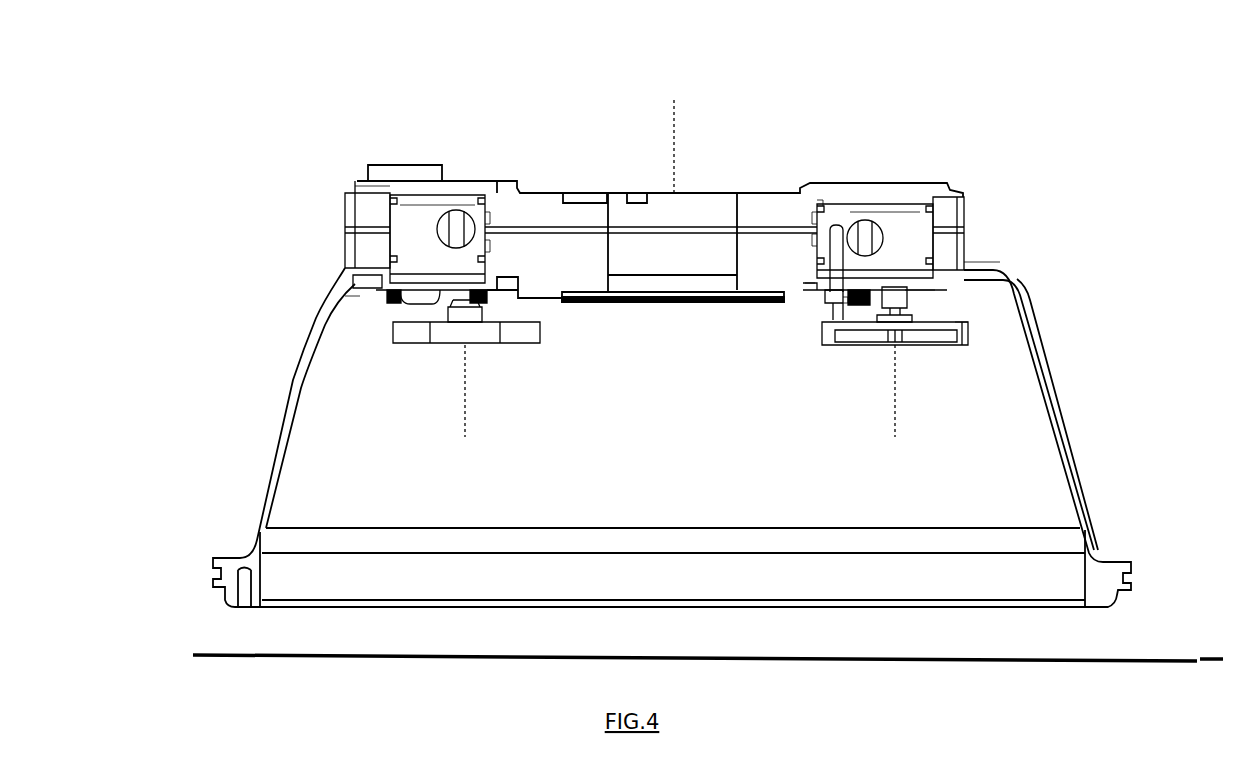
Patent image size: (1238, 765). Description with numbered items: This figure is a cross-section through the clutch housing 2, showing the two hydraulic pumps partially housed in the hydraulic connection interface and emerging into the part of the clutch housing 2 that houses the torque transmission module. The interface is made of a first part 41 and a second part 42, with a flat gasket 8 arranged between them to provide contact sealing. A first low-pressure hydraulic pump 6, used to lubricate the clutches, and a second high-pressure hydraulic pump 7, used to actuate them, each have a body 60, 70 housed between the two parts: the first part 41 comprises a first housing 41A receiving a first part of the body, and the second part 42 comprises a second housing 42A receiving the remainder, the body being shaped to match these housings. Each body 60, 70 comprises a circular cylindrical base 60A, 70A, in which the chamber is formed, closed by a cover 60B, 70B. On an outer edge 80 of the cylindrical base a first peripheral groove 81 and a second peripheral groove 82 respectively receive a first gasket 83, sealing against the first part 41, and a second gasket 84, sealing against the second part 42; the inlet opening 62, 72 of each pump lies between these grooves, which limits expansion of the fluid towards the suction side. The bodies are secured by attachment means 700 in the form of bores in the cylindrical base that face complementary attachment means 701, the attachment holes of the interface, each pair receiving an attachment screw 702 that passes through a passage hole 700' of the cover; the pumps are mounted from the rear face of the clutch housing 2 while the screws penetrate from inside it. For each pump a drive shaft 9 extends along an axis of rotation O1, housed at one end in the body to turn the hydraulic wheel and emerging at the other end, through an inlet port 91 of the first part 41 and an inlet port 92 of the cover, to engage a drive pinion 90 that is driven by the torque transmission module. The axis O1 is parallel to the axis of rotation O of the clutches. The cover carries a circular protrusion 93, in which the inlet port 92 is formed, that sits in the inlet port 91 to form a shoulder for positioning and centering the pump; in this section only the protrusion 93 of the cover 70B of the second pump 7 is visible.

The clutch housing 2 is at (160, 107).
The axis of rotation of the clutches O is at (674, 145).
The axis of rotation of the drive shaft O1 is at (465, 387).
The second part of the interface 42 is at (330, 200).
The first part of the interface 41 is at (322, 258).
The first housing 41A is at (487, 247).
The second housing 42A is at (487, 218).
The flat gasket 8 is at (345, 227).
The outer edge 80 is at (345, 238).
The first peripheral groove 81 is at (345, 305).
The second peripheral groove 82 is at (355, 190).
The first gasket 83 is at (812, 263).
The second gasket 84 is at (818, 207).
The first low-pressure hydraulic pump 6 is at (435, 203).
The body of the first pump 60 is at (418, 196).
The cylindrical base of the first pump 60A is at (440, 203).
The cover of the first pump 60B is at (382, 278).
The inlet opening of the first pump 62 is at (484, 201).
The second high-pressure hydraulic pump 7 is at (924, 229).
The body of the second pump 70 is at (953, 188).
The cylindrical base of the second pump 70A is at (895, 207).
The cover of the second pump 70B is at (812, 283).
The inlet opening of the second pump 72 is at (855, 208).
The attachment means 700 is at (982, 258).
The passage holes 700' is at (1052, 276).
The complementary attachment means 701 is at (828, 292).
The attachment screw 702 is at (394, 302).
The drive shaft 9 is at (460, 302).
The drive pinion 90 is at (540, 335).
The inlet port of the first part 91 is at (915, 290).
The inlet port of the cover 92 is at (871, 292).
The circular protrusion 93 is at (965, 323).